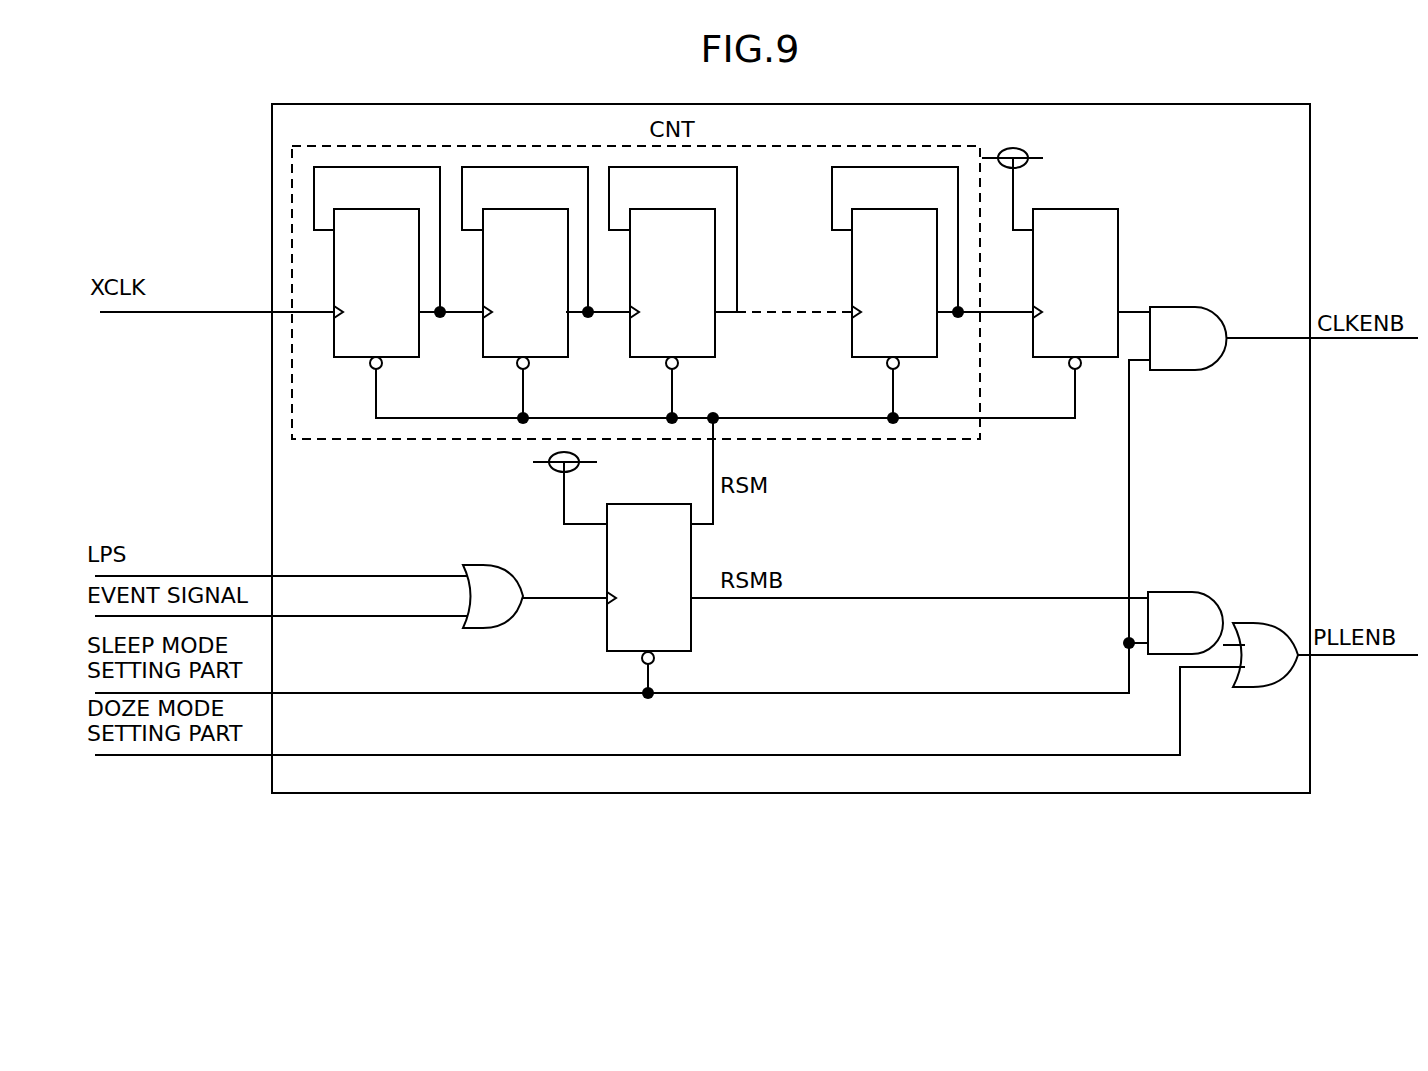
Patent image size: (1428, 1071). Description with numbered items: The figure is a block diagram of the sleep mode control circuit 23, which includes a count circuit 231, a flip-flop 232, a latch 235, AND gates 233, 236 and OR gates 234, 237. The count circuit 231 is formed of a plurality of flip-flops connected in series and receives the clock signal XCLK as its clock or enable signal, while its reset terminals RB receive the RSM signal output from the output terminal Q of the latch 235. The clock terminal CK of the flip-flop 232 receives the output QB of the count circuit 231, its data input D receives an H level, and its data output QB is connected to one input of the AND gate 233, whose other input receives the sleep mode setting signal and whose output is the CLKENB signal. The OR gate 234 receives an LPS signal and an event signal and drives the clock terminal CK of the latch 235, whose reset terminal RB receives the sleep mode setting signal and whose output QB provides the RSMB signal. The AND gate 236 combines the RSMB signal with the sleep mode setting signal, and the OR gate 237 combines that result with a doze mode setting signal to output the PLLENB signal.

The sleep mode control circuit 23 is at (971, 104).
The count circuit 231 is at (975, 146).
The flip-flop 232 is at (1119, 213).
The AND gate 233 is at (1173, 305).
The OR gate 234 is at (476, 565).
The latch 235 is at (607, 549).
The AND gate 236 is at (1170, 590).
The OR gate 237 is at (1252, 622).